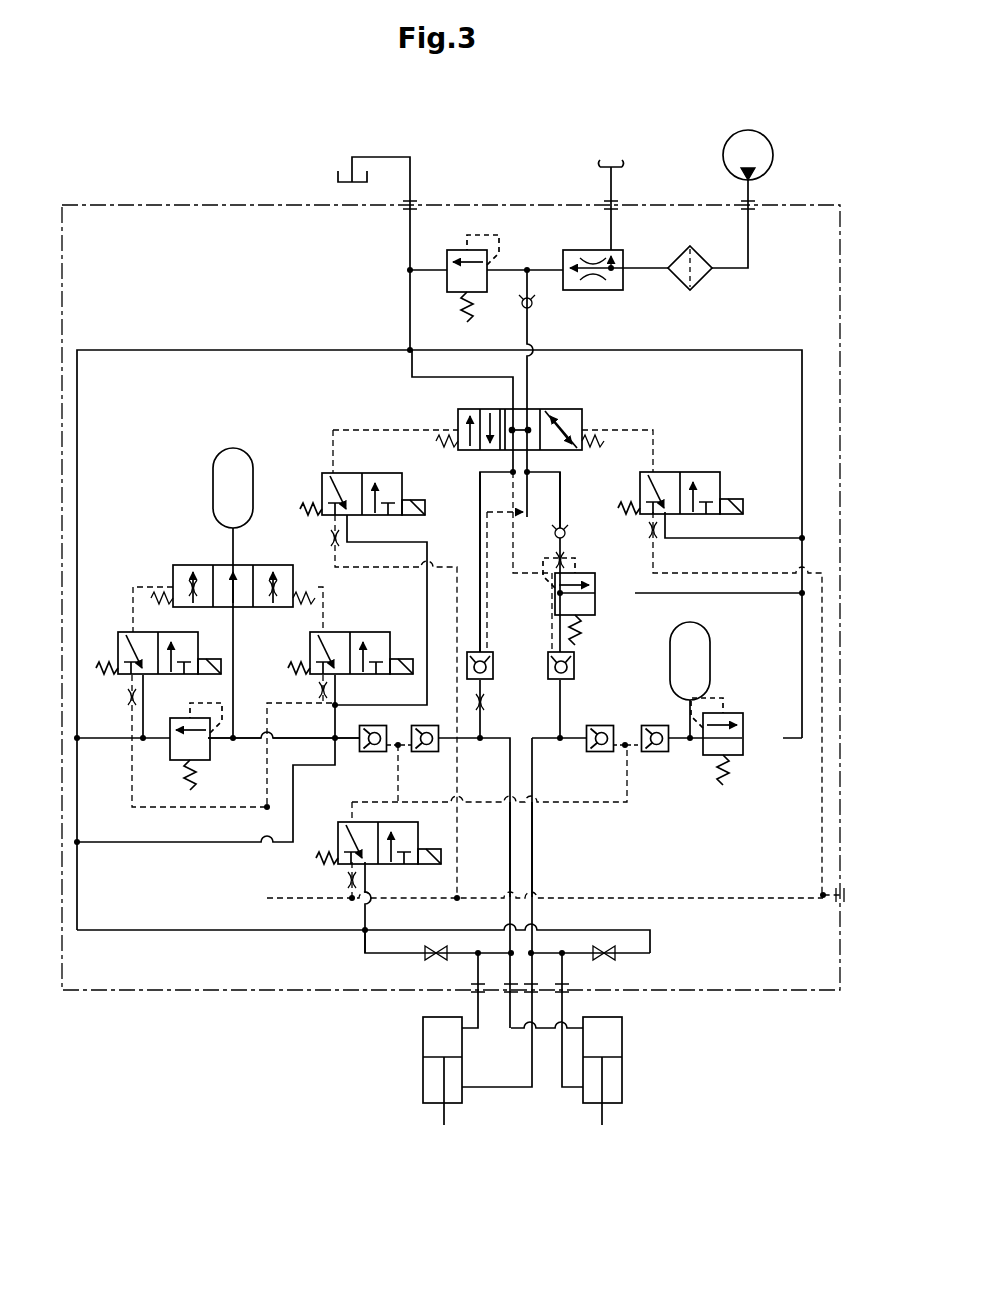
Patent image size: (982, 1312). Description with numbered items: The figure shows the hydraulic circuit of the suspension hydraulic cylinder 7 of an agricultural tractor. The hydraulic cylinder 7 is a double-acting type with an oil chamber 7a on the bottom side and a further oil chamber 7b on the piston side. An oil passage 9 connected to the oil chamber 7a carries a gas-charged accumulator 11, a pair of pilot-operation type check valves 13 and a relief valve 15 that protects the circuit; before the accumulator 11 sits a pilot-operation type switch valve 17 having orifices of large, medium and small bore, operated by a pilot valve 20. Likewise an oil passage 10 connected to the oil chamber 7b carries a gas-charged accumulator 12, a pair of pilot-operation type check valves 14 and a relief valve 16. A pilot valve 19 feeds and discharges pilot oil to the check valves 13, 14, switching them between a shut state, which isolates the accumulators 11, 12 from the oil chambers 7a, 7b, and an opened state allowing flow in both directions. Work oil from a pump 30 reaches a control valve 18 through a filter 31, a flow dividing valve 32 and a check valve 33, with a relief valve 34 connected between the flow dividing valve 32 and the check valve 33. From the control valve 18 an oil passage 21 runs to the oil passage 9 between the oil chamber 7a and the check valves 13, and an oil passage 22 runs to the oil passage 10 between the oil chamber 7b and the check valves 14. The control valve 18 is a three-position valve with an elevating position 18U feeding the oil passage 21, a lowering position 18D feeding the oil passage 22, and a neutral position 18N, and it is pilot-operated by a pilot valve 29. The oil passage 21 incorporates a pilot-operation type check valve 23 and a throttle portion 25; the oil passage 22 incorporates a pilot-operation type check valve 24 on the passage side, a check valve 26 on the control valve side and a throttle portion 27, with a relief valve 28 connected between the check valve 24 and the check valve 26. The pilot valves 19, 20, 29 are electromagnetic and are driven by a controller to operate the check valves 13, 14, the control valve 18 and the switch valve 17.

The hydraulic cylinder 7 is at (357, 1010).
The oil chamber 7a is at (430, 1034).
The oil chamber 7b is at (430, 1073).
The oil passage 9 is at (250, 745).
The oil passage 10 is at (534, 847).
The accumulator 11 is at (213, 481).
The accumulator 12 is at (711, 660).
The check valves 13 is at (372, 752).
The check valves 14 is at (655, 725).
The relief valve 15 is at (178, 762).
The relief valve 16 is at (752, 755).
The switch valve 17 is at (200, 565).
The control valve 18 is at (586, 418).
The lowering position 18D is at (458, 420).
The neutral position 18N is at (529, 408).
The elevating position 18U is at (577, 408).
The pilot valve 19 is at (338, 836).
The pilot valve 20 is at (118, 640).
The oil passage 21 is at (478, 530).
The oil passage 22 is at (565, 497).
The check valve 23 is at (489, 652).
The check valve 24 is at (550, 680).
The throttle portion 25 is at (488, 702).
The check valve 26 is at (567, 531).
The throttle portion 27 is at (570, 560).
The relief valve 28 is at (637, 612).
The pilot valve 29 is at (340, 500).
The pump 30 is at (748, 130).
The filter 31 is at (702, 282).
The flow dividing valve 32 is at (612, 292).
The check valve 33 is at (537, 306).
The relief valve 34 is at (459, 250).